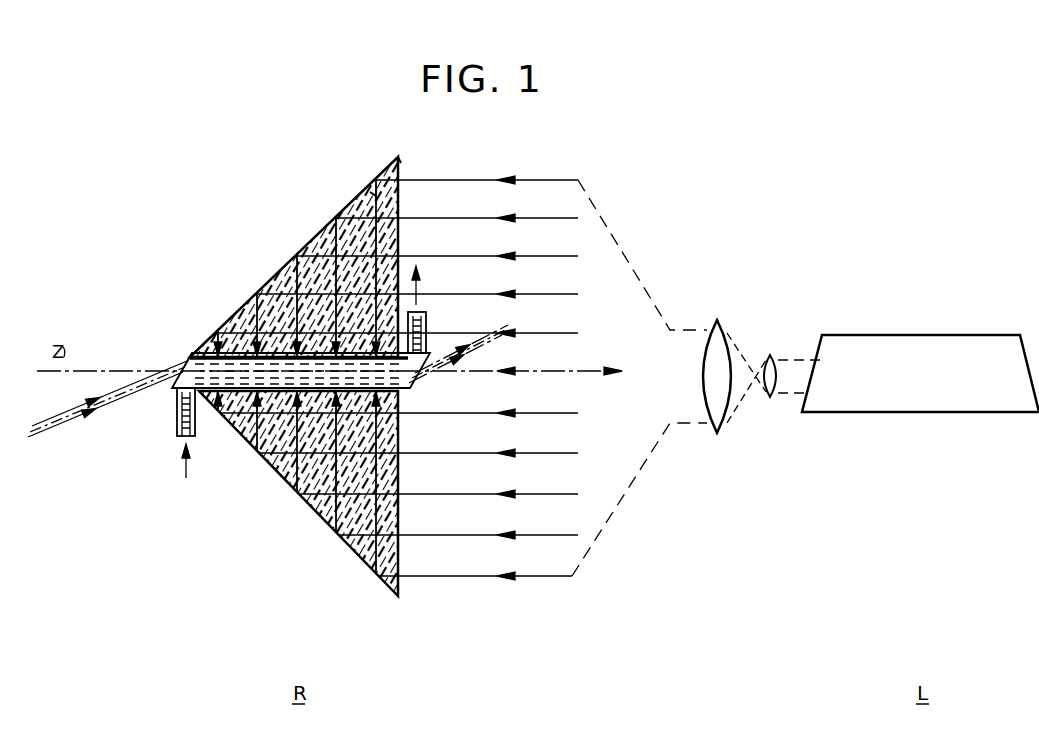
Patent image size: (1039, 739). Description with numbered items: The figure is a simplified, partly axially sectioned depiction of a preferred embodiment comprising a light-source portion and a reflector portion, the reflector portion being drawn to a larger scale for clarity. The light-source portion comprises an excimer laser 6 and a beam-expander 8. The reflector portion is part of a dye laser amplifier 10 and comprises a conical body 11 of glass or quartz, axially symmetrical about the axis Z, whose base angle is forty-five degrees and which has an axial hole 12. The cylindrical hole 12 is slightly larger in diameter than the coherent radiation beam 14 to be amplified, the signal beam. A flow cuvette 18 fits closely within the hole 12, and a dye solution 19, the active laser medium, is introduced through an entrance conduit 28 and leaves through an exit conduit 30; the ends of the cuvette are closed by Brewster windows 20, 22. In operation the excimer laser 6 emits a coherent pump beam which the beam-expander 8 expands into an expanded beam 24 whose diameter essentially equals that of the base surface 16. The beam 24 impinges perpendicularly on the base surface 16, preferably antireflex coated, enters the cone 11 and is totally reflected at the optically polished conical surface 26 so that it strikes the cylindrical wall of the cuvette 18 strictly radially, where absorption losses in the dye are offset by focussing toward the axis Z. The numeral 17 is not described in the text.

The excimer laser 6 is at (920, 373).
The beam-expander 8 is at (744, 331).
The dye laser amplifier 10 is at (292, 243).
The conical body 11 is at (316, 511).
The axial hole 12 is at (237, 321).
The coherent radiation beam 14 is at (128, 403).
The base surface 16 is at (401, 167).
The end face 17 is at (196, 353).
The flow cuvette 18 is at (212, 407).
The dye solution 19 is at (188, 473).
The Brewster window 20 is at (185, 357).
The Brewster window 22 is at (412, 380).
The expanded beam 24 is at (543, 560).
The conical surface 26 is at (365, 191).
The entrance conduit 28 is at (177, 428).
The exit conduit 30 is at (426, 320).